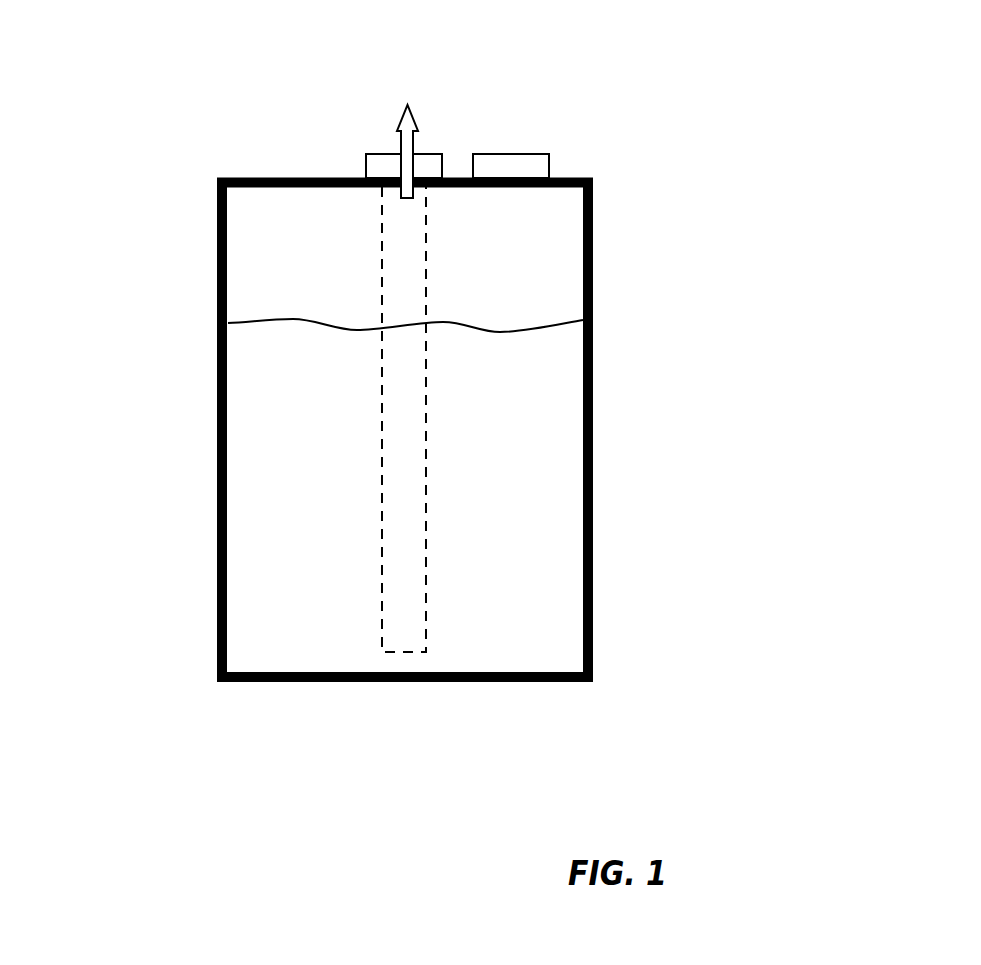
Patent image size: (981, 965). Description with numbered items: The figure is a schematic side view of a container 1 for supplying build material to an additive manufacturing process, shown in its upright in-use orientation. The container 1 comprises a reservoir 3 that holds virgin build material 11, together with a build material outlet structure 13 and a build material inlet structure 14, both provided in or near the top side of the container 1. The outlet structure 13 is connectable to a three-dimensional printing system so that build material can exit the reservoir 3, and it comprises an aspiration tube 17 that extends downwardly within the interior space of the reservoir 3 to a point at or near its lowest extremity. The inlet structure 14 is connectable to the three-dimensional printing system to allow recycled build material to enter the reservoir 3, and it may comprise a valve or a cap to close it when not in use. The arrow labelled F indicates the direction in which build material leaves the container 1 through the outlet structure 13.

The container 1 is at (676, 92).
The reservoir 3 is at (218, 613).
The build material 11 is at (344, 479).
The build material outlet structure 13 is at (418, 160).
The build material inlet structure 14 is at (527, 160).
The aspiration tube 17 is at (410, 452).
The flow direction F is at (399, 132).